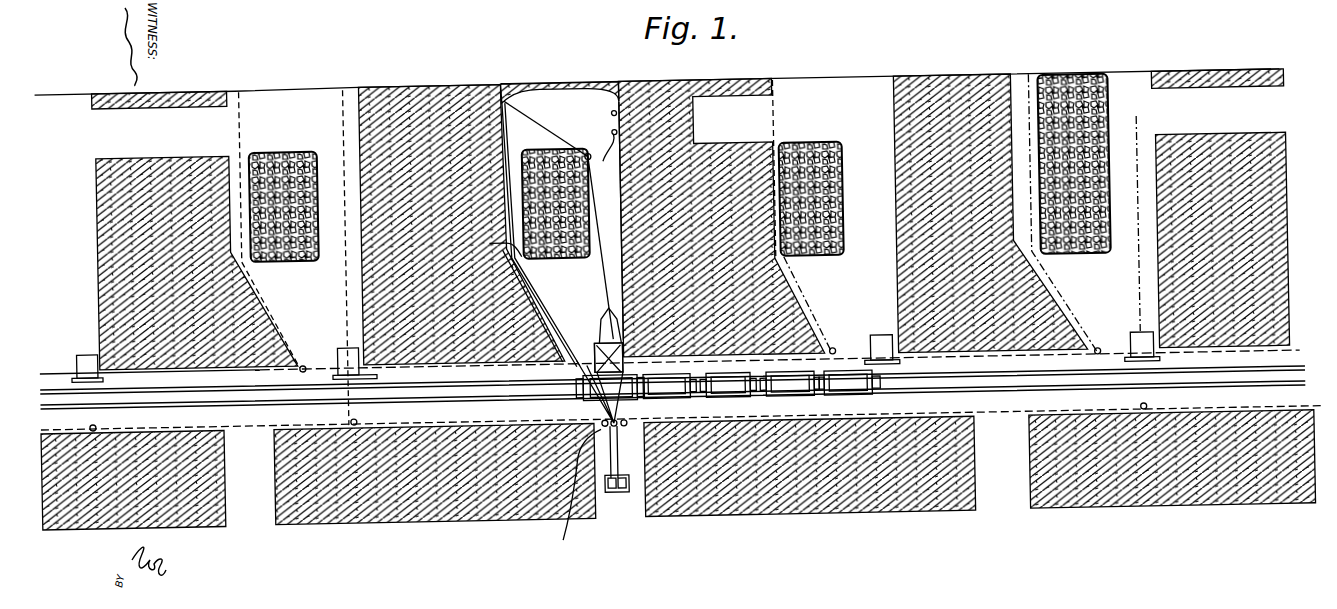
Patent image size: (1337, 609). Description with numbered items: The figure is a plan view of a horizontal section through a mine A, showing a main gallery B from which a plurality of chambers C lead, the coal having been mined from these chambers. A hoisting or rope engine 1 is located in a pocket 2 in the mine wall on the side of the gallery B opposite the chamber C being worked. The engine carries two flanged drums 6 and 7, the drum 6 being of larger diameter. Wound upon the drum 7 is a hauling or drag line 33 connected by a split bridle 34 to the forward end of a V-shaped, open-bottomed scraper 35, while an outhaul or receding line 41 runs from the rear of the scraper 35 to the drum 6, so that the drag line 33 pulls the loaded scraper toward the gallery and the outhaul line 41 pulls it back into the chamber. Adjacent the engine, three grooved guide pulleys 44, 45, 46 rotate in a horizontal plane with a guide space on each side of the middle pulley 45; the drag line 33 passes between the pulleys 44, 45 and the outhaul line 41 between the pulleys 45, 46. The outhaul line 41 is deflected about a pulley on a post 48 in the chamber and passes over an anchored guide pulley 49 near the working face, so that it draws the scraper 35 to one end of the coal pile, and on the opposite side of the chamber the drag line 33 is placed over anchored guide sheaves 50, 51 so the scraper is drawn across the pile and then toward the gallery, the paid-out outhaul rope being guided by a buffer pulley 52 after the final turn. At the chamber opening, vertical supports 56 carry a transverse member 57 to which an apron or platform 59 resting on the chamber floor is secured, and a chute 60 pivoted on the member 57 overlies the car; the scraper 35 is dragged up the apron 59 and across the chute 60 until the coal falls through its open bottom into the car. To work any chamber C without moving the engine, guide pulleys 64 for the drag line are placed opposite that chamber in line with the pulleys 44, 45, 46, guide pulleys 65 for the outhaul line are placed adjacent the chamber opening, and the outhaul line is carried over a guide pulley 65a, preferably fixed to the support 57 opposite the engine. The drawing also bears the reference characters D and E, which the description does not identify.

The hoisting or rope engine 1 is at (608, 503).
The pocket 2 is at (660, 542).
The flanged drum 6 is at (603, 445).
The flanged drum 7 is at (620, 480).
The hauling or drag line 33 is at (622, 410).
The split bridle 34 is at (596, 362).
The scraper 35 is at (606, 330).
The outhaul or receding line 41 is at (600, 290).
The grooved guide pulley 44 is at (618, 438).
The grooved guide pulley 45 is at (570, 494).
The grooved guide pulley 46 is at (600, 412).
The post 48 is at (492, 246).
The guide pulley 49 is at (512, 114).
The guide sheave 50 is at (616, 125).
The guide sheave 51 is at (605, 237).
The buffer pulley 52 is at (589, 165).
The vertical supports 56 is at (1116, 394).
The transverse member 57 is at (368, 385).
The apron or platform 59 is at (86, 356).
The chute 60 is at (575, 400).
The guide pulleys 64 is at (1158, 422).
The guide pulleys 65 is at (306, 373).
The guide pulley 65a is at (640, 375).
The horizontal section through a mine A is at (656, 71).
The main gallery B is at (681, 410).
The chambers C is at (691, 171).
The train of cars D is at (770, 404).
The track E is at (490, 410).